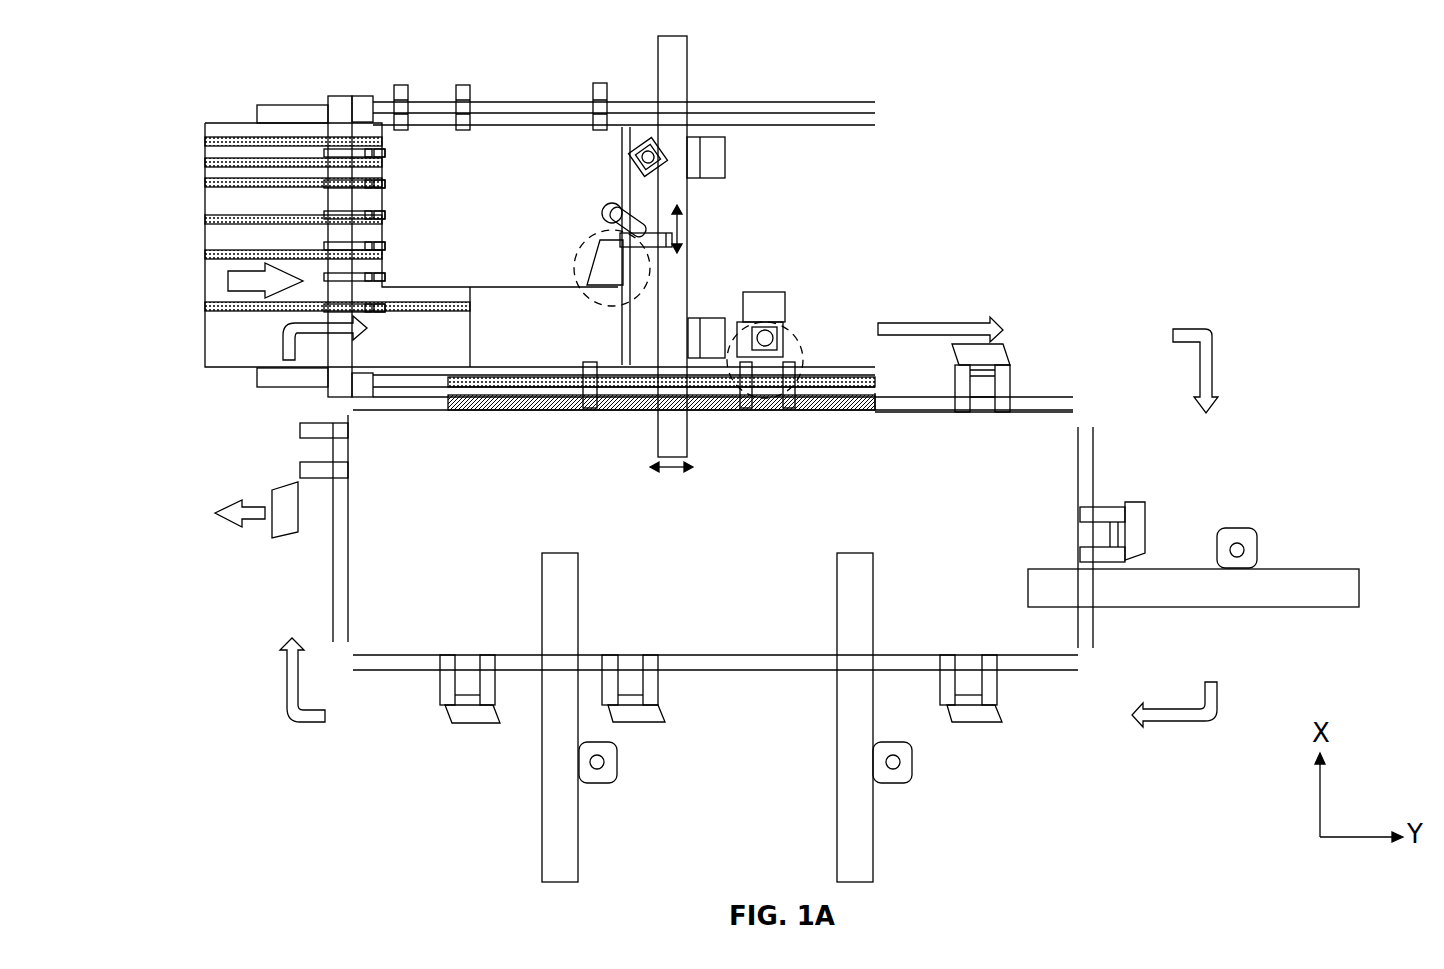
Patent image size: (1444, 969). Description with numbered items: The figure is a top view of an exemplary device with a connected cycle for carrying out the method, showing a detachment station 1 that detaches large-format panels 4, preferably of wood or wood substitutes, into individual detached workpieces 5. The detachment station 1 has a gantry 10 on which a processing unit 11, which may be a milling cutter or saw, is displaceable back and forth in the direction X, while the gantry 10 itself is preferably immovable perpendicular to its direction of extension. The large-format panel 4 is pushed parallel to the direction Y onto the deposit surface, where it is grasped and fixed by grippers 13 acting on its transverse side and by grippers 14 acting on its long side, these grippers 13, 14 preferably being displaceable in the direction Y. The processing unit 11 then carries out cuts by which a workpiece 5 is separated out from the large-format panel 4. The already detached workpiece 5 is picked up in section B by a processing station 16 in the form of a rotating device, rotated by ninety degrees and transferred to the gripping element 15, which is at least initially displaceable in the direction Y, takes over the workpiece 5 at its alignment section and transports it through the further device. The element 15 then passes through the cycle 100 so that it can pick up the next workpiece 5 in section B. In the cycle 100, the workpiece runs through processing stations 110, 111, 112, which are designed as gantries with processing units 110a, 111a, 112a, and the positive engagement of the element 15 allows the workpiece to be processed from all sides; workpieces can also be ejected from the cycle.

The detachment station 1 is at (192, 92).
The large-format panel 4 is at (468, 168).
The workpiece 5 is at (599, 261).
The gantry 10 is at (680, 78).
The processing unit 11 is at (648, 232).
The grippers 13 is at (354, 88).
The grippers 14 is at (599, 80).
The gripping element 15 is at (356, 445).
The processing station 16 is at (821, 287).
The cycle 100 is at (255, 767).
The processing station 110 is at (1305, 588).
The processing unit 110a is at (1240, 528).
The processing station 111 is at (860, 858).
The processing unit 111a is at (893, 769).
The processing station 112 is at (563, 865).
The processing unit 112a is at (602, 762).